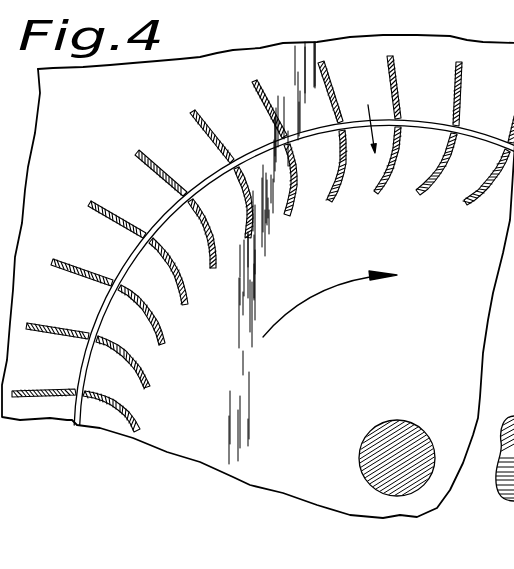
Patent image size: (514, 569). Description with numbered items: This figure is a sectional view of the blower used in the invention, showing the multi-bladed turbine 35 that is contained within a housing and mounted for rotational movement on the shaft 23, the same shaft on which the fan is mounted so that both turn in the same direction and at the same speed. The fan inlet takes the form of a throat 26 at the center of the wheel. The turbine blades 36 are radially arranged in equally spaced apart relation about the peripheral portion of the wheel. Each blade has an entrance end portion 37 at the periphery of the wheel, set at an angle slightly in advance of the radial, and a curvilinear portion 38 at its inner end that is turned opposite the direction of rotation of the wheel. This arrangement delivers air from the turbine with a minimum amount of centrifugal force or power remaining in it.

The shaft 23 is at (383, 421).
The throat 26 is at (473, 333).
The multi-bladed turbine 35 is at (184, 445).
The turbine blades 36 is at (299, 202).
The entrance end portion 37 is at (330, 78).
The curvilinear portion 38 is at (336, 200).